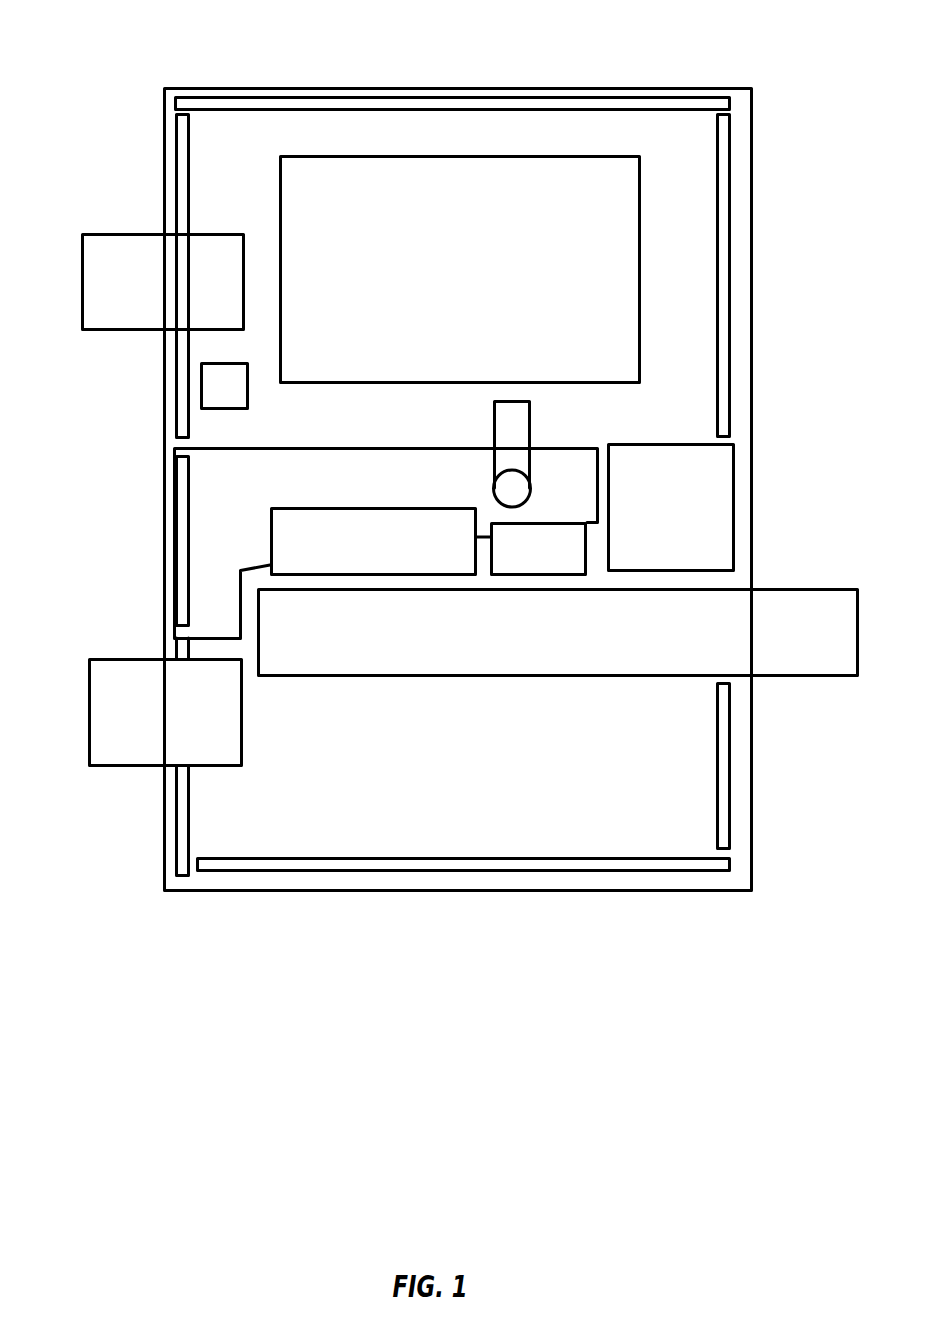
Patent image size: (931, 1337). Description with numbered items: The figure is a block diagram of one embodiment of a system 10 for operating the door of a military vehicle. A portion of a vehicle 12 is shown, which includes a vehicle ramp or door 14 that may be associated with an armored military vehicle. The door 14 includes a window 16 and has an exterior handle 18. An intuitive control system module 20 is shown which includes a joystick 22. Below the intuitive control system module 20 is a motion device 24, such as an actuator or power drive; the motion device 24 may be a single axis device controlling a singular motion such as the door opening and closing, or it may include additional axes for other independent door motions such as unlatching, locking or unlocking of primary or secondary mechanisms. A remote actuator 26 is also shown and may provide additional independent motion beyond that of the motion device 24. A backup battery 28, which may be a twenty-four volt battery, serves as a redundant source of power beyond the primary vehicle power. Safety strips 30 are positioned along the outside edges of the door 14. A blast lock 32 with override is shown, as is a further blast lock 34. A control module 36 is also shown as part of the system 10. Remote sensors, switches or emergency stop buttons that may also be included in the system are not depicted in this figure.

The system 10 is at (168, 52).
The vehicle 12 is at (710, 83).
The door 14 is at (565, 88).
The window 16 is at (628, 254).
The exterior handle 18 is at (250, 396).
The intuitive control system module 20 is at (349, 444).
The joystick 22 is at (525, 423).
The motion device 24 is at (798, 588).
The remote actuator 26 is at (375, 507).
The backup battery 28 is at (530, 522).
The safety strips 30 is at (270, 112).
The blast lock with override 32 is at (110, 236).
The blast lock 34 is at (125, 658).
The control module 36 is at (681, 443).